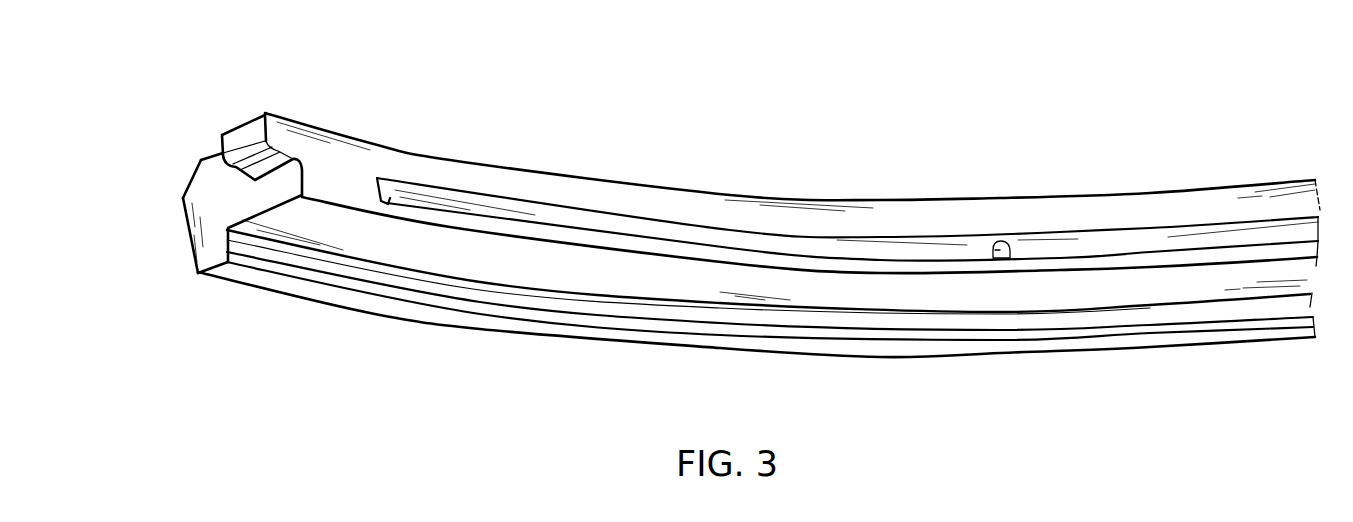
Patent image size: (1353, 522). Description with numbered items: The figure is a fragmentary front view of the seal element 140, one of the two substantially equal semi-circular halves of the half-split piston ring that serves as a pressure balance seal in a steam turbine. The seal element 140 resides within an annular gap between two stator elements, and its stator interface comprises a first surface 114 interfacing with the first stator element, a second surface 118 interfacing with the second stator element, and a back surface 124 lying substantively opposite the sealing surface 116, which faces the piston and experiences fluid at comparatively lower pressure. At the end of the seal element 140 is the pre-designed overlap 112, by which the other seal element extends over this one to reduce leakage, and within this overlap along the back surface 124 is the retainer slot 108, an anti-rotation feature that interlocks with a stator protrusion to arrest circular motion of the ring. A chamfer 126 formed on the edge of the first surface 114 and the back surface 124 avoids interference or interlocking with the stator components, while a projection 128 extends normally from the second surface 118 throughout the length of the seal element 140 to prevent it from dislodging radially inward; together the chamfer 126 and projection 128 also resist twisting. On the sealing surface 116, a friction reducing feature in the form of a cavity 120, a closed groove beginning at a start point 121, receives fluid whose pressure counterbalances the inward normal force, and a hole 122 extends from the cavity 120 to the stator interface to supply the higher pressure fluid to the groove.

The retainer slot 108 is at (278, 192).
The pre-designed overlap 112 is at (242, 122).
The first surface 114 is at (368, 142).
The sealing surface 116 is at (668, 202).
The second surface 118 is at (592, 273).
The cavity 120 is at (558, 222).
The start point 121 is at (378, 190).
The hole 122 is at (998, 247).
The back surface 124 is at (187, 237).
The chamfer 126 is at (190, 178).
The projection 128 is at (237, 277).
The second seal element 140 is at (923, 85).